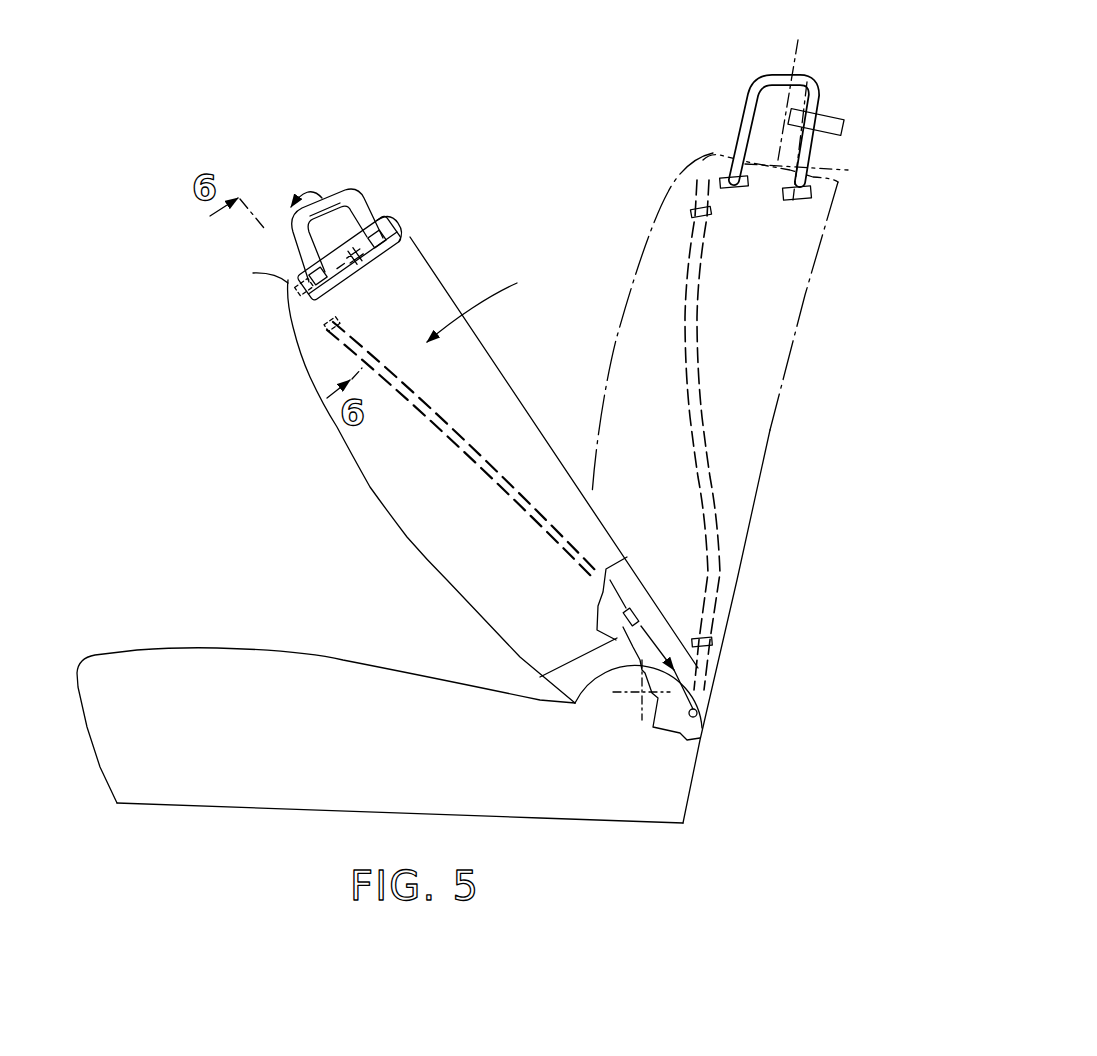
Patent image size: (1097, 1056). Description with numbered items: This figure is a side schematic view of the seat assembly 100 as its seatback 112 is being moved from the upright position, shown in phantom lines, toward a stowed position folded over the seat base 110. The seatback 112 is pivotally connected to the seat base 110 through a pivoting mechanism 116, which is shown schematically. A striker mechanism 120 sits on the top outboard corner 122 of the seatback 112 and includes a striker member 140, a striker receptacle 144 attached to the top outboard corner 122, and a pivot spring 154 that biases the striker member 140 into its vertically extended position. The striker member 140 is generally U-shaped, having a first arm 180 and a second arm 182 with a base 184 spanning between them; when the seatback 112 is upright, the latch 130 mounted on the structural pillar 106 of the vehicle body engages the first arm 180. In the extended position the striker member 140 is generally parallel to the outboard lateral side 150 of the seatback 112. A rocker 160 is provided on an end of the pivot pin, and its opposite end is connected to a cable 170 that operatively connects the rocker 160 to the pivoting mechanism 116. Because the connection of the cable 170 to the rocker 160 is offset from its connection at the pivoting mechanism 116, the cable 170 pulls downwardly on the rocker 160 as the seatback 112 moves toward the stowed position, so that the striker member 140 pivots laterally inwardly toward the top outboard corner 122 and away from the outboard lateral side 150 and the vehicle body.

The seat assembly 100 is at (497, 150).
The structural pillar 106 is at (795, 53).
The seat base 110 is at (215, 647).
The seatback 112 is at (366, 491).
The pivoting mechanism 116 is at (640, 695).
The striker mechanism 120 is at (332, 160).
The top outboard corner 122 is at (282, 277).
The latch 130 is at (834, 116).
The striker member 140 is at (366, 186).
The striker receptacle 144 is at (410, 241).
The outboard lateral side 150 is at (473, 393).
The pivot spring 154 is at (352, 270).
The rocker 160 is at (298, 295).
The cable 170 is at (642, 625).
The first arm 180 is at (366, 196).
The second arm 182 is at (292, 243).
The base 184 is at (337, 217).